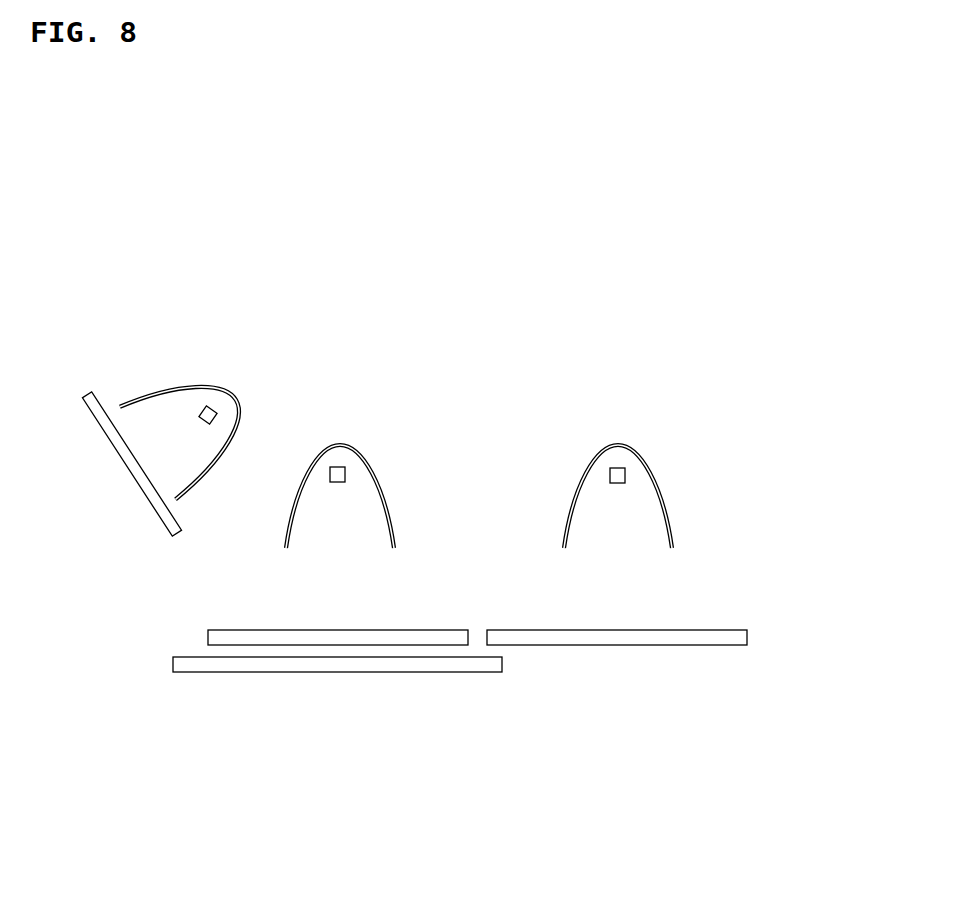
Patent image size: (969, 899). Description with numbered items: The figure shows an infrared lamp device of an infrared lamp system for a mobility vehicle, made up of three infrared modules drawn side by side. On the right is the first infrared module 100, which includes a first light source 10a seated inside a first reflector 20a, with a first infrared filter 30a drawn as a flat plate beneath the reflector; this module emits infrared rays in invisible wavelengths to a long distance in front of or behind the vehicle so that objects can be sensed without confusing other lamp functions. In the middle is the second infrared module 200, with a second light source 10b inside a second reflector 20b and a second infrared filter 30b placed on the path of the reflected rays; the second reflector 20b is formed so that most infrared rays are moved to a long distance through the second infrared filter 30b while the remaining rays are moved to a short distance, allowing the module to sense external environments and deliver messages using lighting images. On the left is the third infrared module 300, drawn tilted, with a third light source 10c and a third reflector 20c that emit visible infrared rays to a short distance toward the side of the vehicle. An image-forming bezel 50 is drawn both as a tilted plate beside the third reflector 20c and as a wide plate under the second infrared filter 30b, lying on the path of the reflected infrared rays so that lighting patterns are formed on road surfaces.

The first infrared module 100 is at (708, 404).
The second infrared module 200 is at (430, 404).
The third infrared module 300 is at (189, 352).
The first light source 10a is at (625, 474).
The second light source 10b is at (345, 472).
The third light source 10c is at (212, 409).
The first reflector 20a is at (618, 443).
The second reflector 20b is at (340, 443).
The third reflector 20c is at (155, 390).
The first infrared filter 30a is at (738, 630).
The second infrared filter 30b is at (462, 630).
The image-forming bezel 50 is at (328, 672).